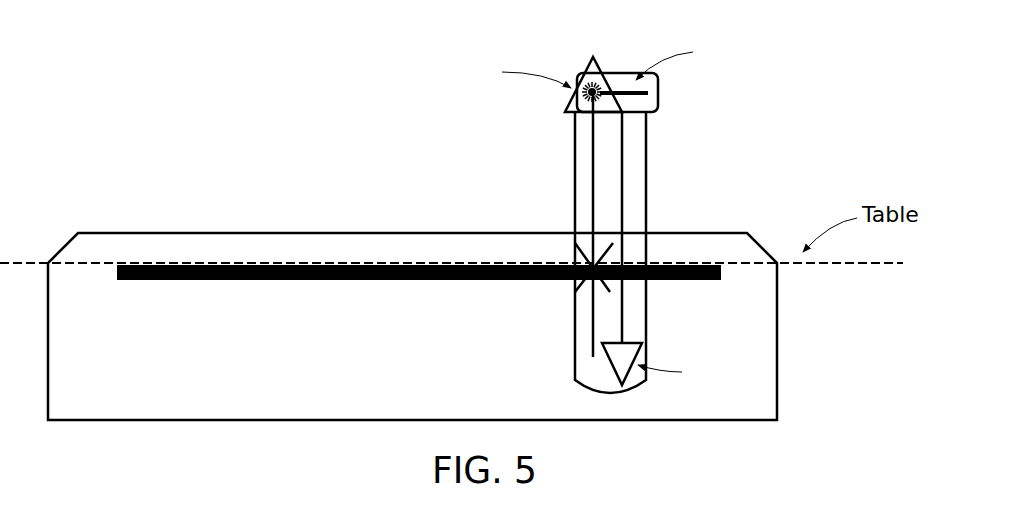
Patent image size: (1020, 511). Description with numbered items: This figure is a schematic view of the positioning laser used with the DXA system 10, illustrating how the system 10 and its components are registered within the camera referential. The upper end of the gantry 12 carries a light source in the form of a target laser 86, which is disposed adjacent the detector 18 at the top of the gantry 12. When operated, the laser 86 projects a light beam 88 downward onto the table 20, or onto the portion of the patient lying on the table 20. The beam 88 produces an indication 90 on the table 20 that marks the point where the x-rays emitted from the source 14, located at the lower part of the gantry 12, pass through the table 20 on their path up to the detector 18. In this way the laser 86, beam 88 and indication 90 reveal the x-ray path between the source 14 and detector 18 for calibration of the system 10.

The system 10 is at (337, 62).
The gantry 12 is at (648, 160).
The source 14 is at (607, 367).
The detector 18 is at (622, 82).
The table 20 is at (165, 263).
The target laser 86 is at (578, 75).
The light beam 88 is at (577, 143).
The indication 90 is at (573, 280).